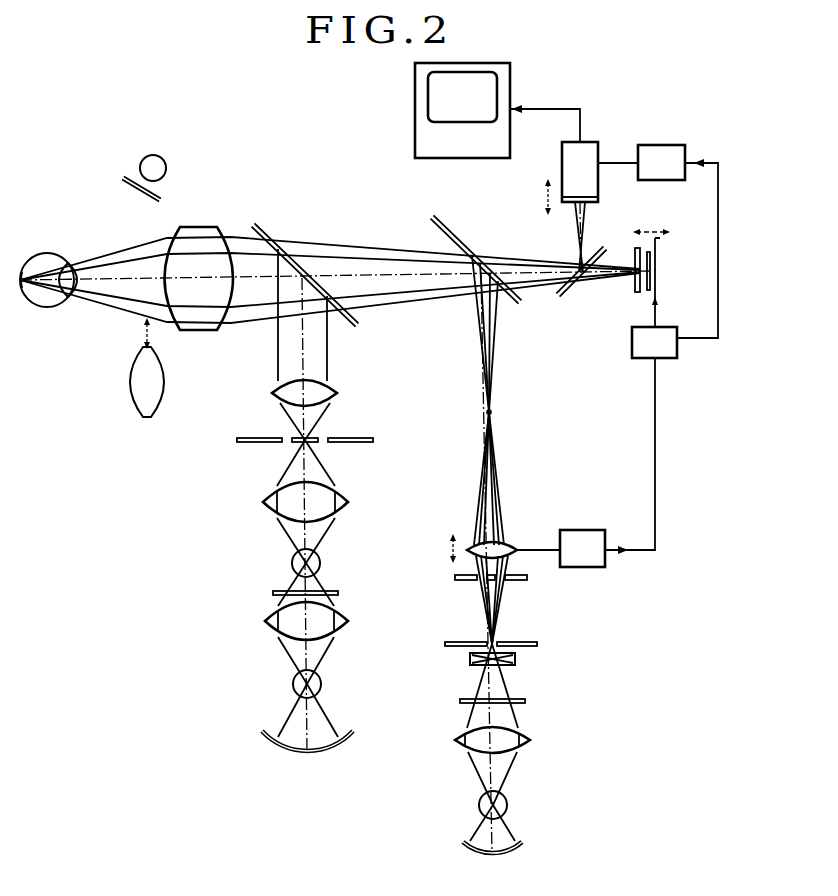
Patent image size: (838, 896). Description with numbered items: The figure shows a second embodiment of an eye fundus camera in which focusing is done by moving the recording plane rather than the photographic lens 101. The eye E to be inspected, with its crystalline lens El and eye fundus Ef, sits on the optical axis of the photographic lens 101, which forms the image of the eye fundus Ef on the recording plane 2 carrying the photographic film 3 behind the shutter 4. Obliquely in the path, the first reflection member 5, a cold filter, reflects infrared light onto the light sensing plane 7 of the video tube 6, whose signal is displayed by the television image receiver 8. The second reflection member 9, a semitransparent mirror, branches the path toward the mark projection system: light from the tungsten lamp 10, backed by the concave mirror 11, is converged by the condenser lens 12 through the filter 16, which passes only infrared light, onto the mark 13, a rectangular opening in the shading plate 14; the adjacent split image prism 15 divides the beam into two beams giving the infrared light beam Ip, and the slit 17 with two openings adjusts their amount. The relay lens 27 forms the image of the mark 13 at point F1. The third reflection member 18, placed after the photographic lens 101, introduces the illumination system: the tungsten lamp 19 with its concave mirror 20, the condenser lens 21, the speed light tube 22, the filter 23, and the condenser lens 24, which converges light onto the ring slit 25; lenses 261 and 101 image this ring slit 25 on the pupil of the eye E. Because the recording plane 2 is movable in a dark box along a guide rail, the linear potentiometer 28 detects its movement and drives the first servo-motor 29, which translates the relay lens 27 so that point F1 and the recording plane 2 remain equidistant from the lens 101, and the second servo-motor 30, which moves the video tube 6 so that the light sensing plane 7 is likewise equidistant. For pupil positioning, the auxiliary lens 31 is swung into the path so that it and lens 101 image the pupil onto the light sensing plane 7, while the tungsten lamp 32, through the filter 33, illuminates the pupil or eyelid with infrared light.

The eye to be inspected E is at (47, 253).
The crystalline lens of eye El is at (70, 268).
The eye fundus Ef is at (47, 307).
The photographic lens 101 is at (195, 227).
The third reflection member 18 is at (268, 237).
The second reflection member 9 is at (515, 300).
The first reflection member 5 is at (575, 292).
The image point of the mark F1 is at (492, 412).
The lens 261 is at (272, 393).
The ring slit 25 is at (237, 439).
The condenser lens 24 is at (263, 502).
The speed light tube 22 is at (292, 563).
The filter 23 is at (273, 593).
The condenser lens 21 is at (265, 621).
The tungsten lamp 19 is at (293, 684).
The concave mirror 20 is at (262, 736).
The infrared light beam Ip is at (478, 512).
The relay lens 27 is at (506, 543).
The slit 17 is at (527, 578).
The mark 13 is at (493, 642).
The shading plate 14 is at (537, 642).
The split image prism 15 is at (515, 660).
The filter 16 is at (525, 701).
The condenser lens 12 is at (530, 742).
The tungsten lamp 10 is at (507, 805).
The concave mirror 11 is at (520, 845).
The television image receiver 8 is at (510, 78).
The video tube 6 is at (598, 152).
The light sensing plane 7 is at (590, 202).
The second servo-motor 30 is at (658, 145).
The linear potentiometer 28 is at (665, 354).
The first servo-motor 29 is at (580, 530).
The shutter 4 is at (635, 282).
The photographic film 3 is at (647, 290).
The recording plane 2 is at (660, 243).
The auxiliary lens 31 is at (132, 382).
The tungsten lamp 32 is at (152, 155).
The filter 33 is at (122, 184).